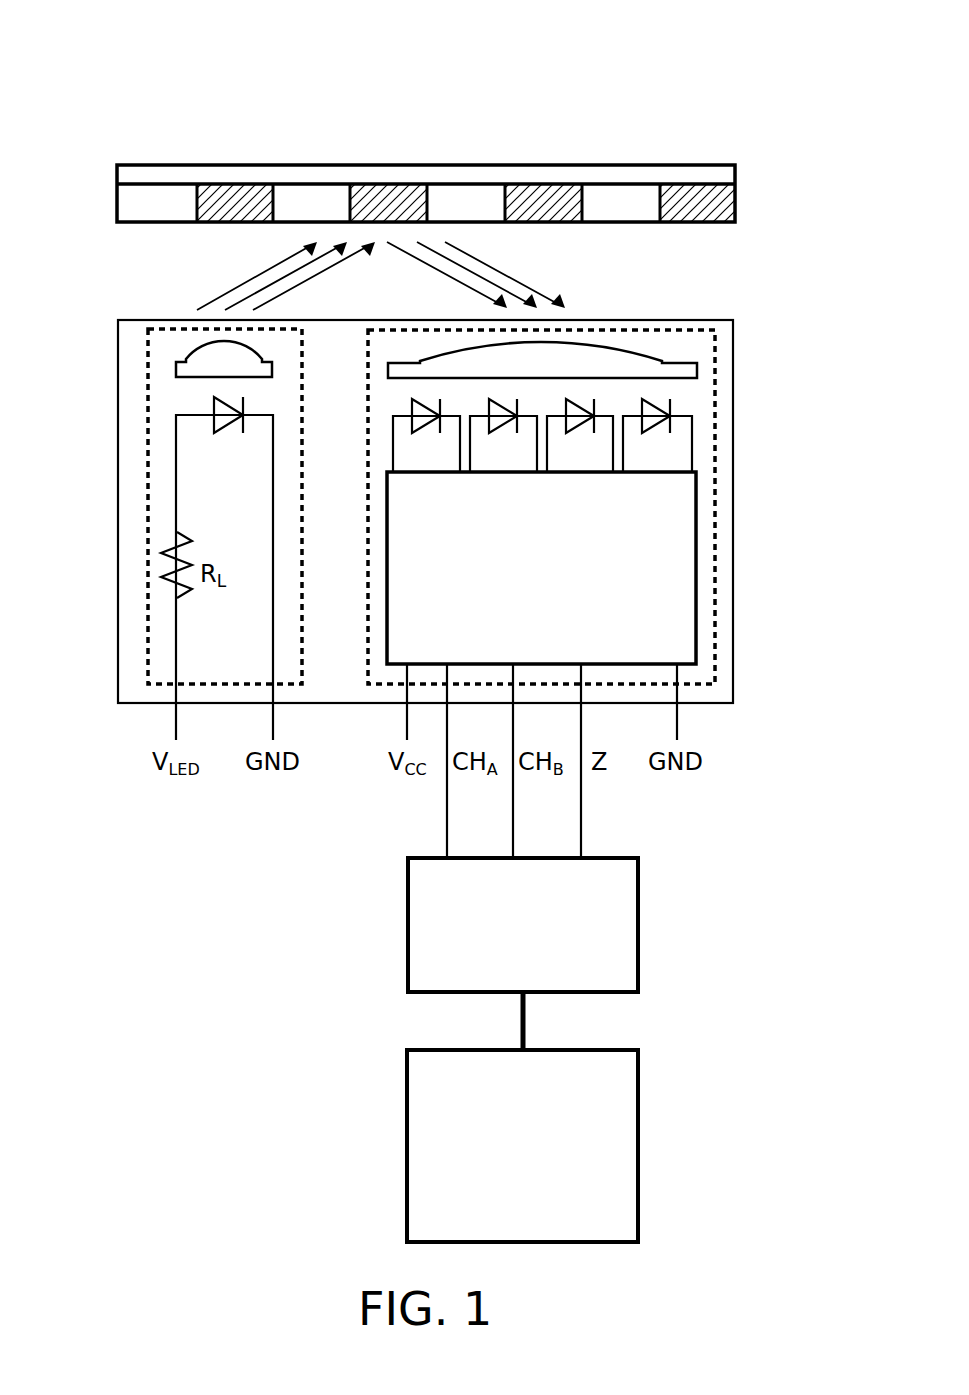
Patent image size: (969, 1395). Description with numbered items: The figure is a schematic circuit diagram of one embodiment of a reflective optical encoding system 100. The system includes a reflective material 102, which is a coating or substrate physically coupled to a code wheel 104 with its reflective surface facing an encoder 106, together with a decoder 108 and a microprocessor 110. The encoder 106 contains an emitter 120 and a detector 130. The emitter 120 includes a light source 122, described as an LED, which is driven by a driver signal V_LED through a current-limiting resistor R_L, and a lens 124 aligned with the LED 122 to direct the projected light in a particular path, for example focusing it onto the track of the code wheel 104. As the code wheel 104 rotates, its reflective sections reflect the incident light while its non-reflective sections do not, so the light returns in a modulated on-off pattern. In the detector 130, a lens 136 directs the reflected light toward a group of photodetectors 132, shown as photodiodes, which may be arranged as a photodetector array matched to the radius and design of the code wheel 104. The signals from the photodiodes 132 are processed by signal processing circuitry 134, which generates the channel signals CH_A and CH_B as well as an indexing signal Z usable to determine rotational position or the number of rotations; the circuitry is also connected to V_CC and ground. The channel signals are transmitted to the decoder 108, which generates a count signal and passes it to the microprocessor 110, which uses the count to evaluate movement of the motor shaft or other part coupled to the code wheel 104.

The reflective optical encoding system 100 is at (152, 44).
The reflective material 102 is at (725, 173).
The code wheel 104 is at (740, 212).
The encoder 106 is at (733, 560).
The decoder 108 is at (640, 953).
The microprocessor 110 is at (640, 1165).
The emitter 120 is at (148, 417).
The light source 122 is at (227, 420).
The lens 124 is at (205, 358).
The detector 130 is at (715, 417).
The photodetectors 132 is at (653, 428).
The signal processing circuitry 134 is at (696, 620).
The lens 136 is at (610, 357).